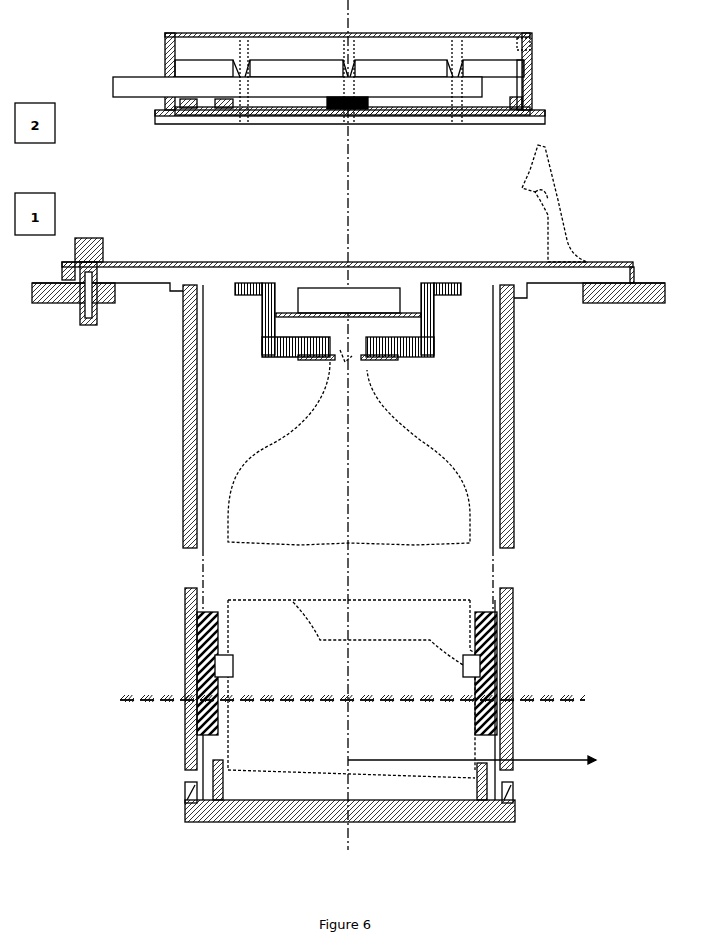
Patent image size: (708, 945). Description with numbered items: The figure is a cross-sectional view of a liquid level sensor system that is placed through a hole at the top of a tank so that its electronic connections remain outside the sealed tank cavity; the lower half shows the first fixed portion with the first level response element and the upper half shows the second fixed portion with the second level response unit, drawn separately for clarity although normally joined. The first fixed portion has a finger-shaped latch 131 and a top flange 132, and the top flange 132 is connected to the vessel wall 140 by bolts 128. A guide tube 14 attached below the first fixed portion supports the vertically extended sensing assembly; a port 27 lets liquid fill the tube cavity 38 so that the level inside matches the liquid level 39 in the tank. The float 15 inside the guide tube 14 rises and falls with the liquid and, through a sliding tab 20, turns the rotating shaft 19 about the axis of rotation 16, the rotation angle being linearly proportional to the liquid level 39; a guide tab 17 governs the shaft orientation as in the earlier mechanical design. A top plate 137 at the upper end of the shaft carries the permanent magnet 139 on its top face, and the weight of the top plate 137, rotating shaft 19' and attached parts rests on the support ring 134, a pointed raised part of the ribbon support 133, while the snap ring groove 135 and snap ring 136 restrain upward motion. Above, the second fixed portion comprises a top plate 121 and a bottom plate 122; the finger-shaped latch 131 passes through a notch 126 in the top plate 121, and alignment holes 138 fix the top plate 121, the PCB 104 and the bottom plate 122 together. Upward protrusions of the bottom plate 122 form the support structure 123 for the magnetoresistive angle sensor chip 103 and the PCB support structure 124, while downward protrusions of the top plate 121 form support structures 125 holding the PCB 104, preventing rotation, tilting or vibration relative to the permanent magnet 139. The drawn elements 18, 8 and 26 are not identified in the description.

The magnetoresistive angle sensor chip 103 is at (326, 14).
The PCB 104 is at (113, 85).
The top plate 121 is at (478, 33).
The bottom plate 122 is at (478, 124).
The support structure 123 is at (412, 115).
The PCB support structure 124 is at (226, 104).
The support structure 125 is at (228, 70).
The notch 126 is at (530, 42).
The alignment holes 138 is at (247, 113).
The axis of rotation 16 is at (348, 240).
The permanent magnet 139 is at (366, 288).
The finger-shaped latch 131 is at (548, 208).
The top flange 132 is at (150, 262).
The vessel wall 140 is at (60, 300).
The bolts 128 is at (92, 326).
The ribbon support 133 is at (262, 330).
The top plate 137 is at (436, 318).
The support ring 134 is at (273, 358).
The snap ring 136 is at (370, 360).
The snap ring groove 135 is at (352, 360).
The guide tube 14 is at (183, 438).
The guide tab 17 is at (198, 530).
The rotating shaft 19' is at (349, 453).
The rotating shaft 19 is at (351, 689).
The sliding tab 20 is at (233, 658).
The left coil 18 is at (197, 622).
The float 15 is at (497, 620).
The liquid level 39 is at (160, 702).
The port 27 is at (187, 770).
The section line arrow 8 is at (472, 752).
The tube cavity 38 is at (215, 800).
The base plate 26 is at (515, 815).